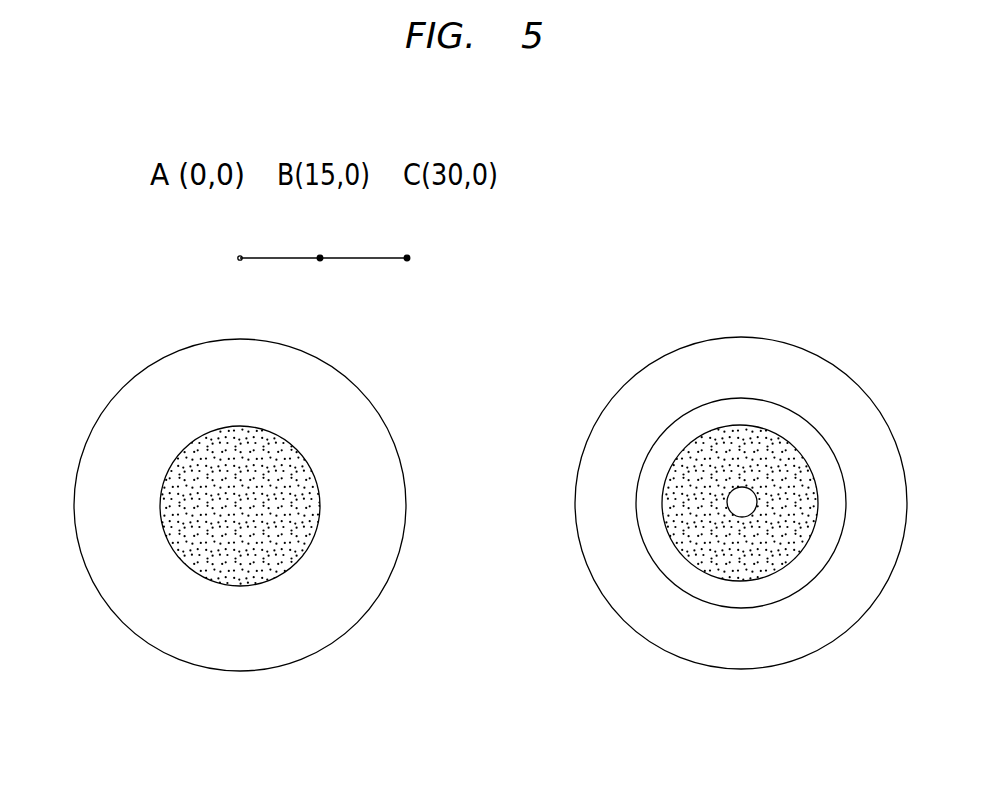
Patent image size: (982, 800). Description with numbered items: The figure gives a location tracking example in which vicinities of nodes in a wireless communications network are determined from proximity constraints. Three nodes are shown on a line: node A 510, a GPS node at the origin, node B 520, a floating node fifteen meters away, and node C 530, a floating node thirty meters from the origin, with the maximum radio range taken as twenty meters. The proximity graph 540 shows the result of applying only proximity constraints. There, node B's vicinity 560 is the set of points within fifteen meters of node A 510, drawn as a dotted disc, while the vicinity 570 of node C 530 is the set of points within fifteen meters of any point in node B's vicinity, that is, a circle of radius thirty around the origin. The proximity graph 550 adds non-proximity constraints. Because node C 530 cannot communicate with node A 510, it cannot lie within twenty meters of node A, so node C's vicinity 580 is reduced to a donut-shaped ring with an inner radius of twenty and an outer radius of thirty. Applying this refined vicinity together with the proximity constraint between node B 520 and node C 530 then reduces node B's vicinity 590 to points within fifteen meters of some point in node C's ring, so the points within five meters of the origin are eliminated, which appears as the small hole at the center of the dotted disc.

The node A 510 is at (242, 255).
The node B 520 is at (317, 262).
The node C 530 is at (410, 255).
The proximity graph 540 is at (210, 523).
The proximity graph 550 is at (745, 519).
The node B's vicinity 560 is at (295, 463).
The vicinity of node C 570 is at (88, 535).
The node C's vicinity 580 is at (842, 378).
The node B's vicinity 590 is at (668, 532).